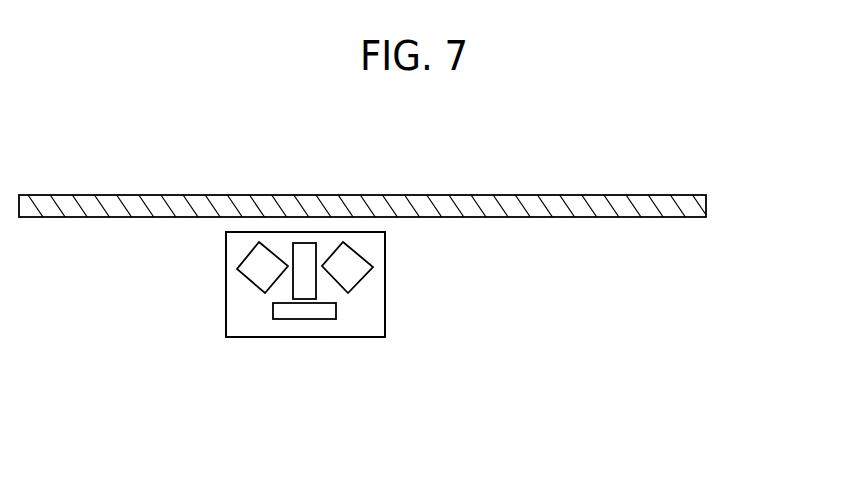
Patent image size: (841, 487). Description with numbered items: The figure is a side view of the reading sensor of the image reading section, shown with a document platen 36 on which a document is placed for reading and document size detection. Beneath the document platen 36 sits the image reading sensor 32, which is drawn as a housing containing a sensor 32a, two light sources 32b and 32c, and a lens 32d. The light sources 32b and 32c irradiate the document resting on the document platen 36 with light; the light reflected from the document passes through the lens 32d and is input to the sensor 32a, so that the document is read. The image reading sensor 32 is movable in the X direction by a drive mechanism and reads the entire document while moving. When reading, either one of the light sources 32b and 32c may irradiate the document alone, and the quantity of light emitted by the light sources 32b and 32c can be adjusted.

The document platen 36 is at (692, 195).
The image reading sensor 32 is at (305, 337).
The sensor 32a is at (338, 312).
The light source 32b is at (373, 267).
The light source 32c is at (243, 277).
The lens 32d is at (292, 280).